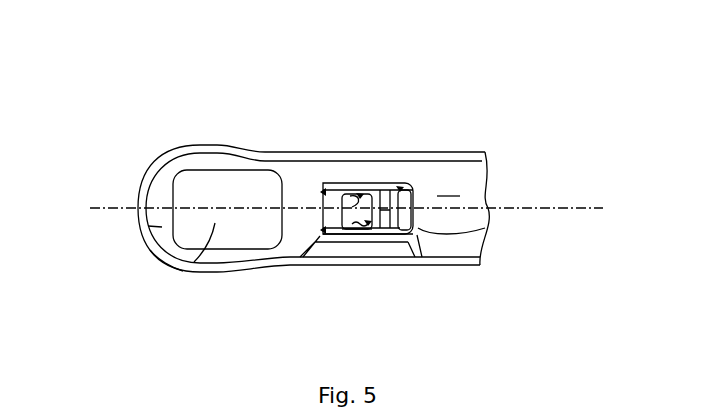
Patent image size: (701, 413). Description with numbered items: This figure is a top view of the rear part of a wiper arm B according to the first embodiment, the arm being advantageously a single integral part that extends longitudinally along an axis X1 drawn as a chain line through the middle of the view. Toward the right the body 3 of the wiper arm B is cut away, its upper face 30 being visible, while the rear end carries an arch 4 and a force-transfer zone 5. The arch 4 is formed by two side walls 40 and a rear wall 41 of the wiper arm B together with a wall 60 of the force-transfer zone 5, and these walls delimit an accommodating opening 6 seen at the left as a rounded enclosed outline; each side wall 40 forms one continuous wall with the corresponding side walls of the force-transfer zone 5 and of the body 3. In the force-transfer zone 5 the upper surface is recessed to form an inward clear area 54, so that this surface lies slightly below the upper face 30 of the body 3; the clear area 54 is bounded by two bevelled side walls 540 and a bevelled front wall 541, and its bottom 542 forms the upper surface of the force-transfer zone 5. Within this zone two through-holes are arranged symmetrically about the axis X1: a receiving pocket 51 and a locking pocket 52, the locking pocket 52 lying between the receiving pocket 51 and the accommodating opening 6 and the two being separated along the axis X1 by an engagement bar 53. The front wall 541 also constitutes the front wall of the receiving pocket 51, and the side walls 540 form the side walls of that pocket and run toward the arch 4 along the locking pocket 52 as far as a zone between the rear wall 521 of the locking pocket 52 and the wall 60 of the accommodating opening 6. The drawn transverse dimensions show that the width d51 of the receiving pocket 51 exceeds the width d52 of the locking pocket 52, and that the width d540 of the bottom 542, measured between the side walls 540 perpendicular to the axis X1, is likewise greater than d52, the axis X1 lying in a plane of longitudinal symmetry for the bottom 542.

The body 3 is at (505, 189).
The arch 4 is at (144, 155).
The force-transfer zone 5 is at (371, 144).
The accommodating opening 6 is at (183, 272).
The upper face of the body 30 is at (448, 188).
The side wall 40 is at (217, 143).
The rear wall 41 is at (148, 226).
The receiving pocket 51 is at (414, 214).
The locking pocket 52 is at (351, 206).
The engagement bar 53 is at (385, 212).
The clear area 54 is at (322, 186).
The wall of the force-transfer zone 60 is at (282, 198).
The rear wall of the locking pocket 521 is at (345, 232).
The side wall of the clear area 540 is at (392, 190).
The front wall of the clear area 541 is at (490, 228).
The bottom of the clear area 542 is at (321, 233).
The wiper arm B is at (465, 281).
The longitudinal axis X1 is at (345, 197).
The transverse dimension of the bottom d540 is at (318, 208).
The transverse dimension of the locking pocket d52 is at (377, 192).
The transverse dimension of the receiving pocket d51 is at (415, 197).